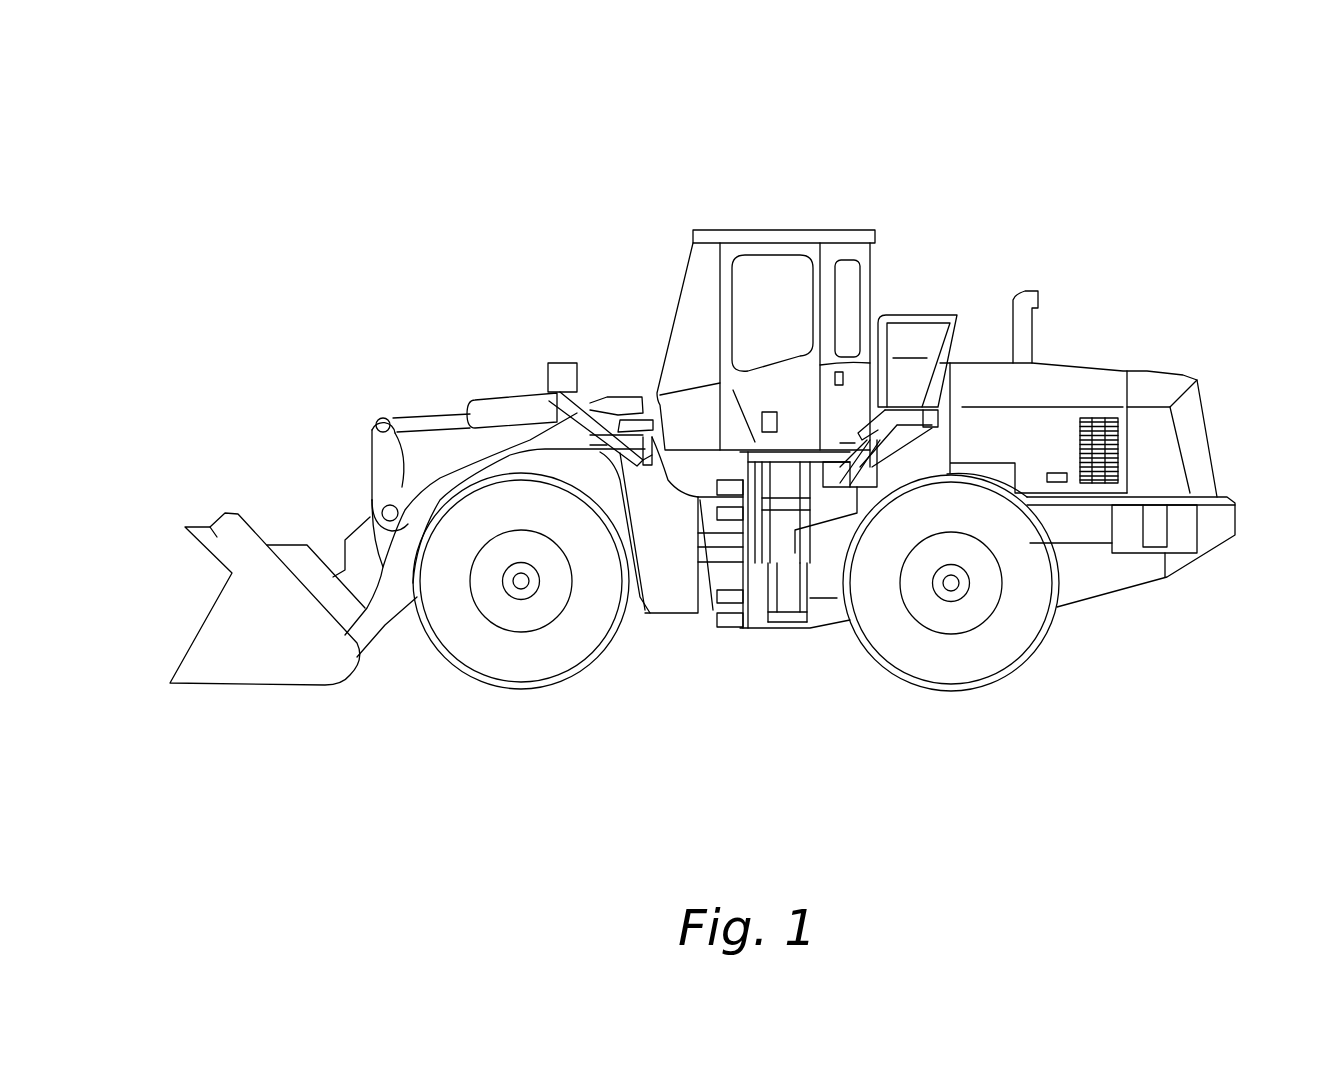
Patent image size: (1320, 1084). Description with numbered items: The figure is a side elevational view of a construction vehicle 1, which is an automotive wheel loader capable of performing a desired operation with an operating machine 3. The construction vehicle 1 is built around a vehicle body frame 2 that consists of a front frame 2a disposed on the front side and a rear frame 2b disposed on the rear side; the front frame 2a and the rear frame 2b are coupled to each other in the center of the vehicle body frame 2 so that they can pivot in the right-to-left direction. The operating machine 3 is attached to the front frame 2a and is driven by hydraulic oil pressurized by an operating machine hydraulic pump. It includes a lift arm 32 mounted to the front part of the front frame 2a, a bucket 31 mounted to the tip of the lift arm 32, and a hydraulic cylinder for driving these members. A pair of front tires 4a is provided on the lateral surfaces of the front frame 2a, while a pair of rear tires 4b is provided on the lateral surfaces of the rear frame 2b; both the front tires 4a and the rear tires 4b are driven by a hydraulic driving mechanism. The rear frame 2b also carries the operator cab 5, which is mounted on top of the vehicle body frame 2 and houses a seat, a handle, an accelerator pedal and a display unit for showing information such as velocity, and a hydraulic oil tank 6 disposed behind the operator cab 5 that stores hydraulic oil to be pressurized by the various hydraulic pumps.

The construction vehicle 1 is at (1013, 137).
The vehicle body frame 2 is at (767, 647).
The front frame 2a is at (677, 587).
The rear frame 2b is at (833, 592).
The operating machine 3 is at (370, 298).
The bucket 31 is at (213, 533).
The lift arm 32 is at (473, 473).
The front tires 4a is at (535, 668).
The rear tires 4b is at (967, 667).
The operator cab 5 is at (798, 217).
The hydraulic oil tank 6 is at (912, 377).